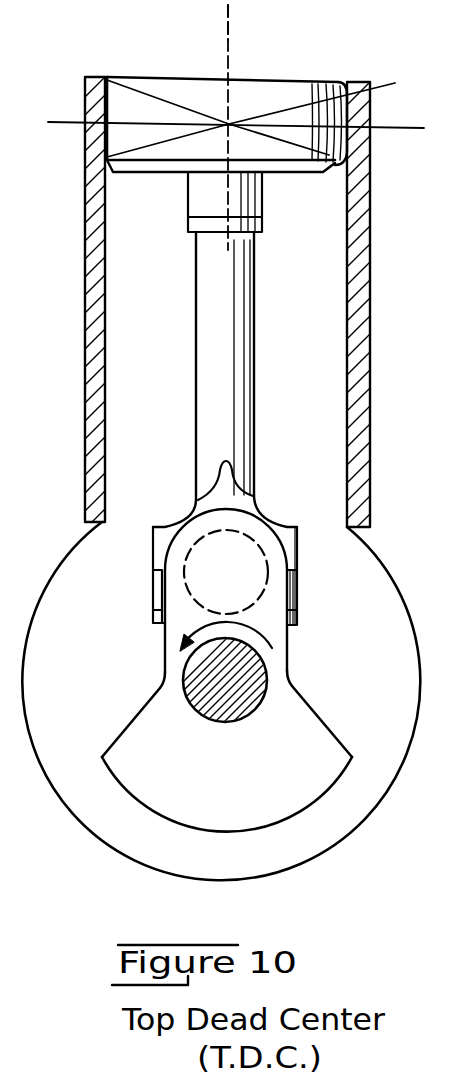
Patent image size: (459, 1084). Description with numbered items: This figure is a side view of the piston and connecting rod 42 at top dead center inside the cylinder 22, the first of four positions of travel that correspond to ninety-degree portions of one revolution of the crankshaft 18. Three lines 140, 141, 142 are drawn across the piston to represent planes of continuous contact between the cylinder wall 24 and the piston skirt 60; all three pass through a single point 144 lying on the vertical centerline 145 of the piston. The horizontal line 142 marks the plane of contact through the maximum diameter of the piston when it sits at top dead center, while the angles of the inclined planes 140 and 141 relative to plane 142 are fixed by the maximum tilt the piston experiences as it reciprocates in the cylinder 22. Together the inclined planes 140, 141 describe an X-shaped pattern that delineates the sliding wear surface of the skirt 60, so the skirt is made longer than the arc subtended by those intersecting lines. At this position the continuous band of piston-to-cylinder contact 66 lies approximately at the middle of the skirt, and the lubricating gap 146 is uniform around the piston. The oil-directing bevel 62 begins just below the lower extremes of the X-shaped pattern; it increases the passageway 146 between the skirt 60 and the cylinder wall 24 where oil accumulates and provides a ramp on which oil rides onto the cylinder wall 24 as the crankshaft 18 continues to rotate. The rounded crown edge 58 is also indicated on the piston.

The crankshaft 18 is at (192, 660).
The cylinder 22 is at (364, 80).
The cylinder wall 24 is at (104, 283).
The connecting rod 42 is at (197, 347).
The piston crown rounded edge 58 is at (318, 80).
The piston skirt 60 is at (107, 77).
The oil-directing bevel 62 is at (281, 173).
The continuous band of piston-to-cylinder contact 66 is at (106, 157).
The plane of contact 140 is at (105, 94).
The plane of contact 141 is at (170, 107).
The horizontal plane of contact 142 is at (391, 128).
The single point 144 is at (231, 78).
The vertical centerline 145 is at (231, 12).
The lubricating gap 146 is at (111, 171).